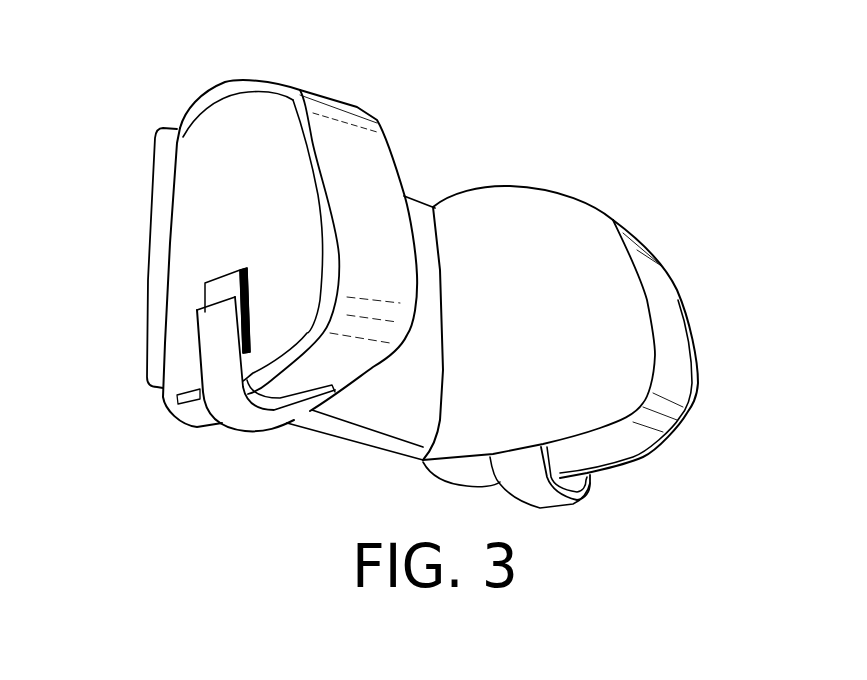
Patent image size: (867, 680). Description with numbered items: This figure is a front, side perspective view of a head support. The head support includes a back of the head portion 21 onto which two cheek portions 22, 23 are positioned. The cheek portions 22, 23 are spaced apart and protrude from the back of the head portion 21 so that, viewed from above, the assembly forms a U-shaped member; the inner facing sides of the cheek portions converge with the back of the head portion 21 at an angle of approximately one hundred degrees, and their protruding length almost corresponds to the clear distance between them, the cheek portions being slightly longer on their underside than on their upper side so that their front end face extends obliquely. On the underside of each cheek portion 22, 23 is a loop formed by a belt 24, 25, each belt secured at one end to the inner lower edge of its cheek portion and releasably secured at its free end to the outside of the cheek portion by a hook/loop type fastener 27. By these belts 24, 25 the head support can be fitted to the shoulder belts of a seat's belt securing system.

The back of the head portion 21 is at (422, 223).
The cheek portion 22 is at (667, 303).
The cheek portion 23 is at (347, 140).
The belt 24 is at (597, 492).
The belt 25 is at (237, 410).
The fastener 27 is at (220, 289).